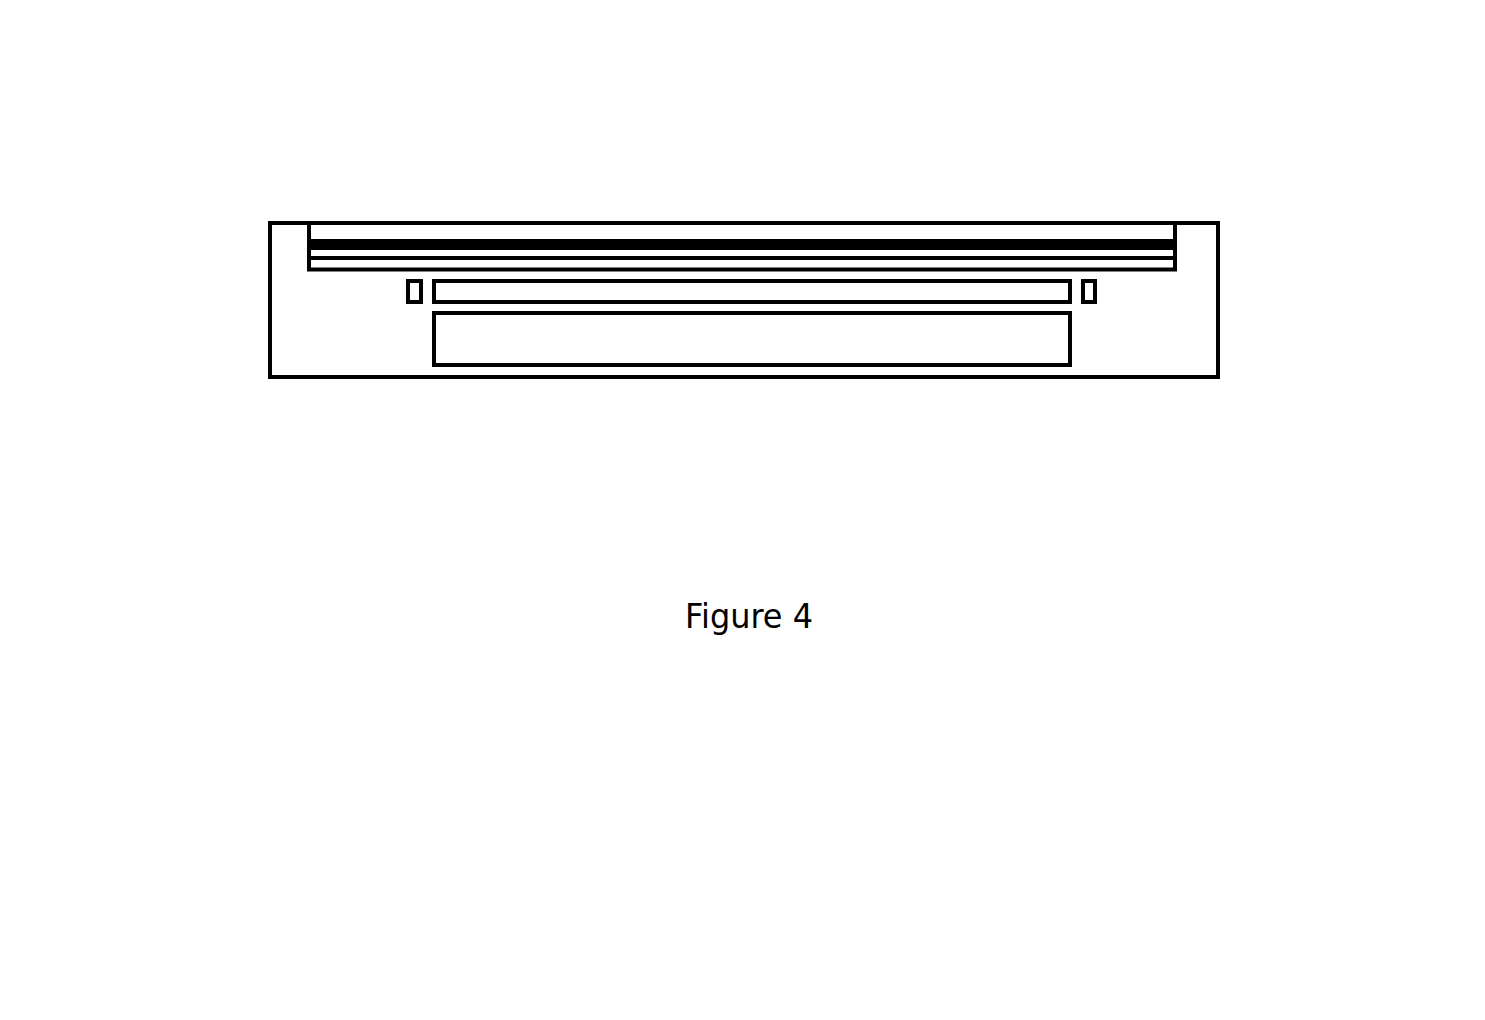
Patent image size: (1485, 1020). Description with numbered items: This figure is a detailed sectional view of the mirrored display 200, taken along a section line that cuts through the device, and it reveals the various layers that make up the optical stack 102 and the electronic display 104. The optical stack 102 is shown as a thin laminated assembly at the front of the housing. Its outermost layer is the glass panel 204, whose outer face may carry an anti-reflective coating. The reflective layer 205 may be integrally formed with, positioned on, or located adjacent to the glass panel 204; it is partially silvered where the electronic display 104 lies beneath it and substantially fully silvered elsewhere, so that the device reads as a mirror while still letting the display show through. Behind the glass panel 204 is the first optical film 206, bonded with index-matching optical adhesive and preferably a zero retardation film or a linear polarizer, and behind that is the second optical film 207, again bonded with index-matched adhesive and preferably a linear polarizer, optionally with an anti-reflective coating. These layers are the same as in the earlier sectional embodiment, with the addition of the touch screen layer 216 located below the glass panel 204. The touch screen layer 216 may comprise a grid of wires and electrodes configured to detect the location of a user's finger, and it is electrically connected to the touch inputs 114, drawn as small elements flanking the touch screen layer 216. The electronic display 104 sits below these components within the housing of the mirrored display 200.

The mirrored display 200 is at (248, 180).
The optical stack 102 is at (810, 241).
The glass panel 204 is at (1177, 233).
The reflective layer 205 is at (1177, 243).
The first optical film 206 is at (1177, 252).
The second optical film 207 is at (1177, 264).
The touch inputs 114 is at (406, 293).
The touch screen layer 216 is at (666, 292).
The electronic display 104 is at (1074, 342).